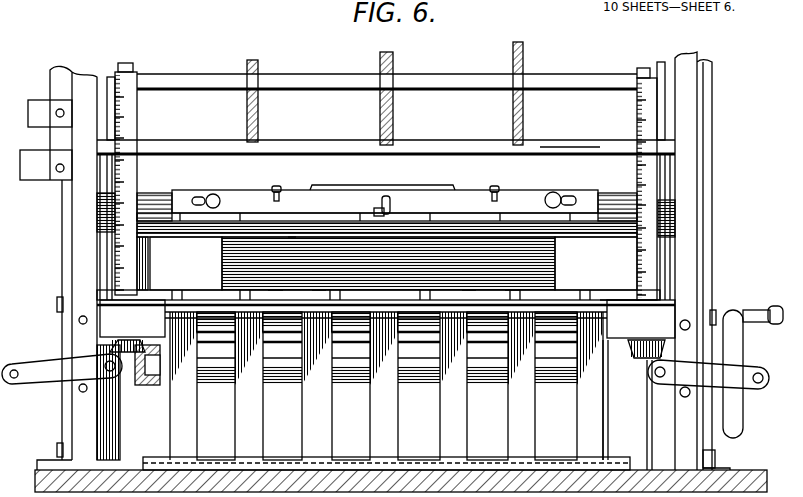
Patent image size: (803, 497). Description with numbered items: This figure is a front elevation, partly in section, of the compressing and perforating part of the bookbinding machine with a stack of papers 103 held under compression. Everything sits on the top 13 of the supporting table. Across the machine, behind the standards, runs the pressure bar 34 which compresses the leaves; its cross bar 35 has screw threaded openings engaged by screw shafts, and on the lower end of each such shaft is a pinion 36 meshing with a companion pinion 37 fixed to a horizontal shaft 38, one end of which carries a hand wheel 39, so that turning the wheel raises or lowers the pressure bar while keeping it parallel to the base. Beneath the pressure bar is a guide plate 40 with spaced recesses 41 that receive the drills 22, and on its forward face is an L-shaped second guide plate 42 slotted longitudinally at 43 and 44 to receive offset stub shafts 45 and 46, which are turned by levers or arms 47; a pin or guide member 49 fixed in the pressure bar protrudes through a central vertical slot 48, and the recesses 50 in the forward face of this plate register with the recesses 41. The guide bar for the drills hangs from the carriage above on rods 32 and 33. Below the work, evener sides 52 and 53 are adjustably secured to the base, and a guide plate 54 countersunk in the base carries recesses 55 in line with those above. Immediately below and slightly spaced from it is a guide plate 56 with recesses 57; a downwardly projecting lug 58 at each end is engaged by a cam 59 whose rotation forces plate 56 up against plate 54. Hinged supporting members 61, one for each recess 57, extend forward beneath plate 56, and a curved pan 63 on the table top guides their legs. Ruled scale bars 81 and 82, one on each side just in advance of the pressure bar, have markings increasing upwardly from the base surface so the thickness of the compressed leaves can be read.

The top 13 is at (757, 478).
The drills 22 is at (378, 108).
The rod 32 is at (110, 88).
The rod 33 is at (660, 98).
The pressure bar 34 is at (612, 206).
The cross bar 35 is at (458, 80).
The pinion 36 is at (112, 348).
The pinion 37 is at (145, 382).
The shaft 38 is at (357, 375).
The hand wheel 39 is at (744, 348).
The guide plate 40 is at (387, 263).
The recesses 41 is at (183, 222).
The second guide plate 42 is at (471, 192).
The slot 43 is at (199, 197).
The slot 44 is at (568, 197).
The stub shaft 45 is at (220, 196).
The stub shaft 46 is at (548, 195).
The levers or arms 47 is at (276, 187).
The vertical slot 48 is at (387, 198).
The pin or guide member 49 is at (378, 210).
The recesses 50 is at (376, 212).
The evener side 52 is at (155, 152).
The evener side 53 is at (565, 152).
The guide plate 54 is at (617, 296).
The recesses 55 is at (184, 291).
The guide plate 56 is at (596, 302).
The recesses 57 is at (317, 297).
The lug 58 is at (387, 319).
The cam 59 is at (100, 355).
The supporting members 61 is at (312, 412).
The curved pan 63 is at (550, 457).
The scale bar 81 is at (643, 82).
The scale bar 82 is at (133, 92).
The papers 103 is at (292, 238).